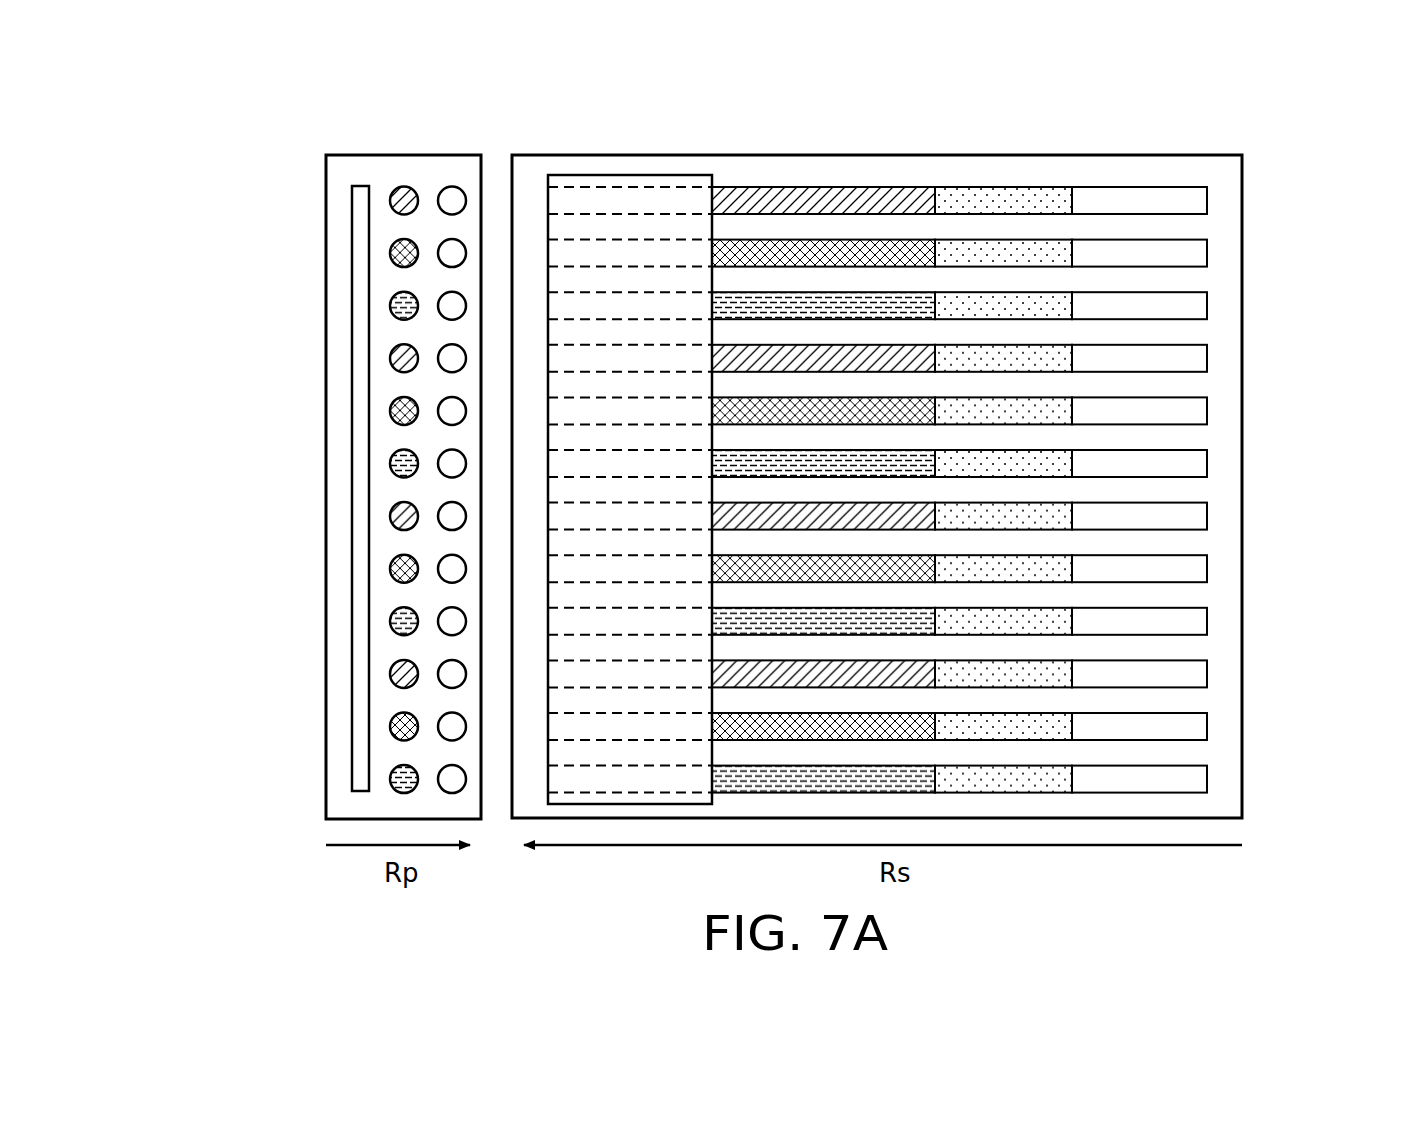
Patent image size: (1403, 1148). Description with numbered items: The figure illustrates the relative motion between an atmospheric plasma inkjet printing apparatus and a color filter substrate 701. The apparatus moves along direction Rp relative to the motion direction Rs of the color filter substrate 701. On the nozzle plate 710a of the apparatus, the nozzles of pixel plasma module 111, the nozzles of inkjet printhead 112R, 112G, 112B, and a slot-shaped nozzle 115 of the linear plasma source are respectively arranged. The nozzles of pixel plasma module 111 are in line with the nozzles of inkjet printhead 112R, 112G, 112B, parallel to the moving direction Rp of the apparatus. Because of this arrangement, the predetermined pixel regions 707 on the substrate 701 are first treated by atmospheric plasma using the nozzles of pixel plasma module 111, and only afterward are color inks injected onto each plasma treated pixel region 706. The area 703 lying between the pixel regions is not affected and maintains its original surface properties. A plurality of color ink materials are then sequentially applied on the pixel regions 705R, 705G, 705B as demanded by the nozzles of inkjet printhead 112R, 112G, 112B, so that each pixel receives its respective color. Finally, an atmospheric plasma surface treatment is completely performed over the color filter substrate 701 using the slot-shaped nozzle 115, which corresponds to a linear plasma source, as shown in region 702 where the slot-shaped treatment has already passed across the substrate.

The nozzle plate 710a is at (340, 443).
The nozzles of pixel plasma module 111 is at (452, 196).
The slot-shaped nozzle 115 is at (363, 491).
The nozzles of inkjet printhead 112R is at (397, 673).
The nozzles of inkjet printhead 112G is at (397, 726).
The nozzles of inkjet printhead 112B is at (397, 778).
The color filter substrate 701 is at (1220, 176).
The region 702 is at (632, 175).
The area between pixel regions 703 is at (1041, 183).
The pixel region 705R is at (759, 195).
The pixel region 705G is at (809, 246).
The pixel region 705B is at (901, 305).
The plasma treated pixel region 706 is at (990, 200).
The predetermined pixel region 707 is at (1122, 200).